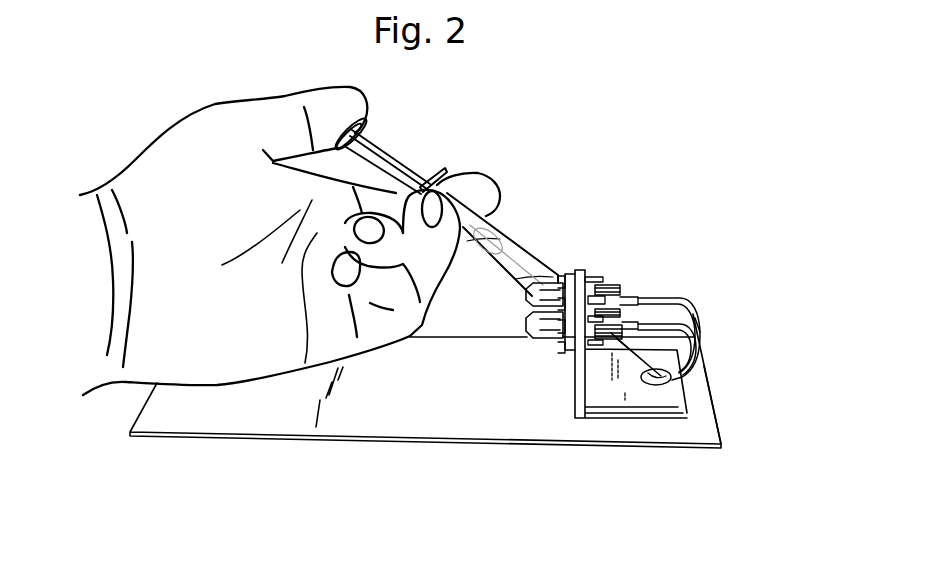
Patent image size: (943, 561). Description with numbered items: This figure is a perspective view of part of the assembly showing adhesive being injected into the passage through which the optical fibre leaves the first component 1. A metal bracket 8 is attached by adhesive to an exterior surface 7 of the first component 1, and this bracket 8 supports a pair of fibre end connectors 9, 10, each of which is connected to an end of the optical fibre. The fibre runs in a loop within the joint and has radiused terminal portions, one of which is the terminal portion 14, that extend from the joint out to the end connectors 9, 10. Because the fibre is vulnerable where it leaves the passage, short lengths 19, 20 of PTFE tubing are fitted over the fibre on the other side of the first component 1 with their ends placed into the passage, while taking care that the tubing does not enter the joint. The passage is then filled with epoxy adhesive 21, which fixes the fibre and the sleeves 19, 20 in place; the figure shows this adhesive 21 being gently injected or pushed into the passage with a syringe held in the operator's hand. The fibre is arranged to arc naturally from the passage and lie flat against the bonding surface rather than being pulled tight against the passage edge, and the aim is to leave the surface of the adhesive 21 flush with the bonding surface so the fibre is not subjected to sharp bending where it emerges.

The first component 1 is at (499, 429).
The exterior surface 7 is at (720, 423).
The metal bracket 8 is at (575, 372).
The fibre end connector 9 is at (618, 314).
The fibre end connector 10 is at (615, 289).
The radiused terminal portion 14 is at (695, 317).
The PTFE tubing length 19 is at (695, 323).
The PTFE tubing length 20 is at (657, 298).
The epoxy adhesive 21 is at (648, 379).